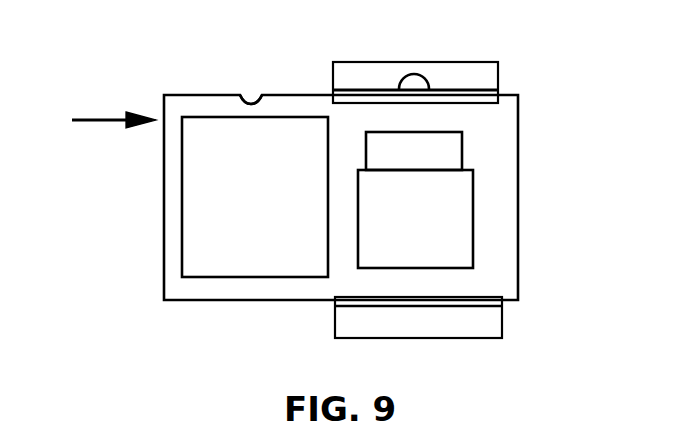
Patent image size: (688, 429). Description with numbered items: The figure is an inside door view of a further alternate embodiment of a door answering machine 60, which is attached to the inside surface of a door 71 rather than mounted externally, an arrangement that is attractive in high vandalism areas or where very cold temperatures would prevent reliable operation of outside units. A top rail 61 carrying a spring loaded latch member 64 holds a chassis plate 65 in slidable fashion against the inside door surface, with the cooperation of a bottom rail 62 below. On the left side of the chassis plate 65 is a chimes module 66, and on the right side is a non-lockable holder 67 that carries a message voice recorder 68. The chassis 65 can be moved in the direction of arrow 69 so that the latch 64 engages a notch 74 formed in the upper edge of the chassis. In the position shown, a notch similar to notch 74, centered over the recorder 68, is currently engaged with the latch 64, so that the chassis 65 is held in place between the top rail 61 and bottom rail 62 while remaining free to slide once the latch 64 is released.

The door answering machine 60 is at (566, 74).
The top rail 61 is at (465, 74).
The bottom rail 62 is at (487, 320).
The spring loaded latch member 64 is at (413, 76).
The chassis plate 65 is at (202, 291).
The chimes module 66 is at (197, 212).
The non-lockable holder 67 is at (452, 212).
The message voice recorder 68 is at (452, 154).
The arrow 69 is at (93, 117).
The door 71 is at (671, 418).
The notch 74 is at (249, 101).